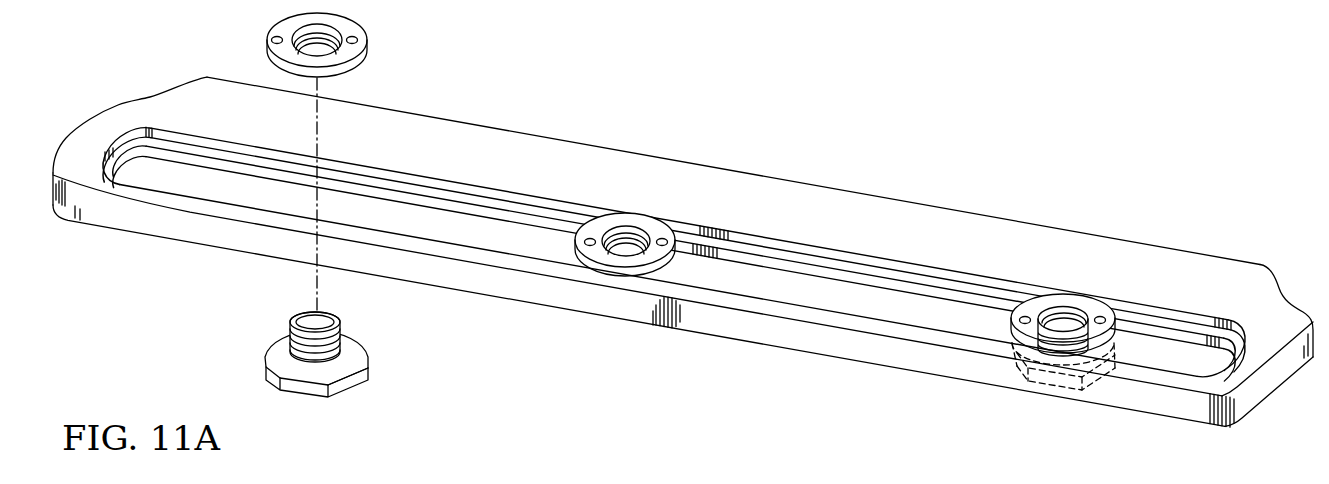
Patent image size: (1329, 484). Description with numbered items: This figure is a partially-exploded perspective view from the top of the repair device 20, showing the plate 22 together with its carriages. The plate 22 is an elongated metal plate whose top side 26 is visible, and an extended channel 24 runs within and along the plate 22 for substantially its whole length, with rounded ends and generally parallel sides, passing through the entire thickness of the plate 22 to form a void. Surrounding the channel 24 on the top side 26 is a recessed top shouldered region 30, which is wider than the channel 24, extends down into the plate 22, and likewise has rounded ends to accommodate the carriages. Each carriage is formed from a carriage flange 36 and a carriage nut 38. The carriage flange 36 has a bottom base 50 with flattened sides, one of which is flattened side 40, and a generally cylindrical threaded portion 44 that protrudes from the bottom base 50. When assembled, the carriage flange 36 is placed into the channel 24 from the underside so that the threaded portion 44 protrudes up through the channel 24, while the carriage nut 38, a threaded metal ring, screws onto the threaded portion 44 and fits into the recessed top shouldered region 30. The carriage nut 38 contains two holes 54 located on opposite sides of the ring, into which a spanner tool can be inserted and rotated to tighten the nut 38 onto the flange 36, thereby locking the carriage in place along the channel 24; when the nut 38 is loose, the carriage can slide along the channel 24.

The repair device 20 is at (1114, 125).
The plate 22 is at (980, 237).
The extended channel 24 is at (822, 293).
The top side 26 is at (787, 200).
The recessed top shouldered region 30 is at (1185, 328).
The carriage flange 36 is at (644, 347).
The carriage nut 38 is at (657, 184).
The flattened side 40 is at (300, 383).
The threaded portion 44 is at (340, 331).
The bottom base 50 is at (338, 369).
The holes 54 is at (271, 40).